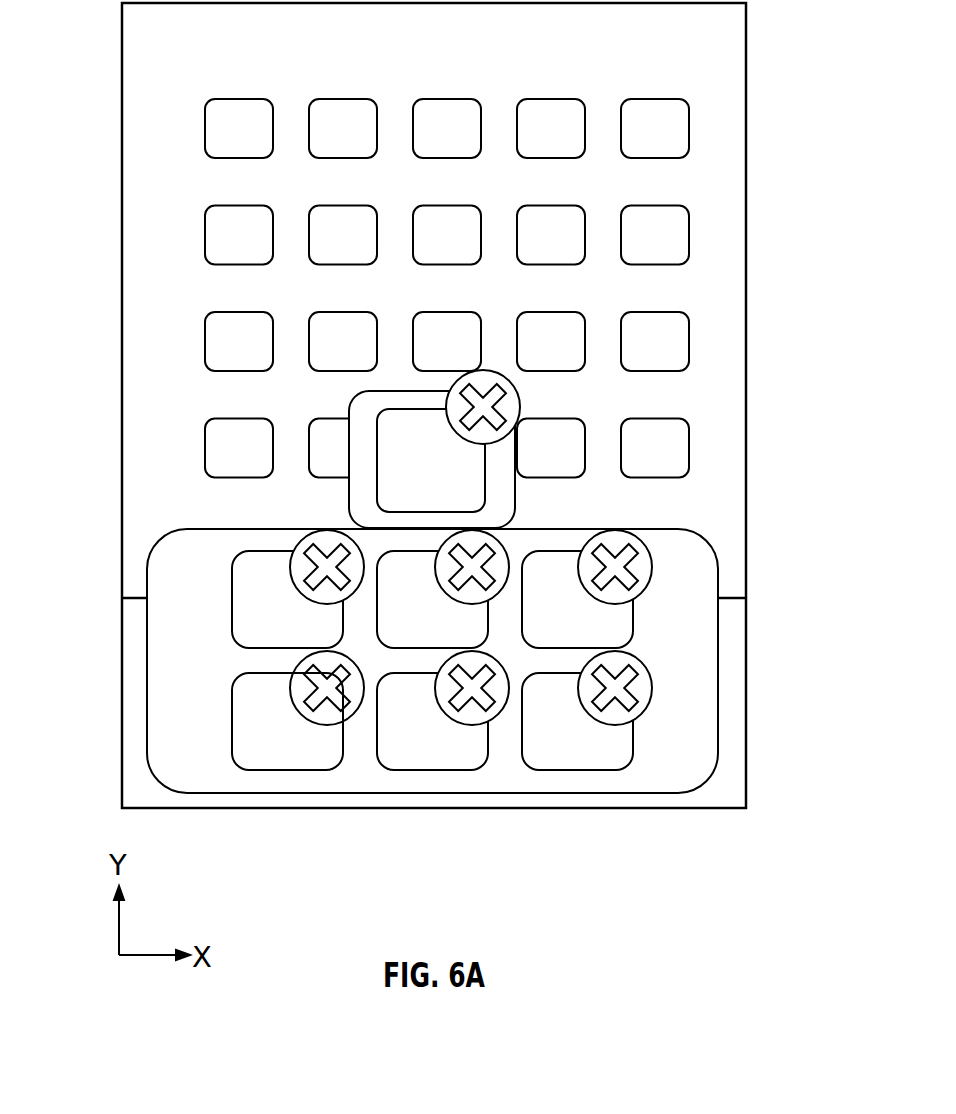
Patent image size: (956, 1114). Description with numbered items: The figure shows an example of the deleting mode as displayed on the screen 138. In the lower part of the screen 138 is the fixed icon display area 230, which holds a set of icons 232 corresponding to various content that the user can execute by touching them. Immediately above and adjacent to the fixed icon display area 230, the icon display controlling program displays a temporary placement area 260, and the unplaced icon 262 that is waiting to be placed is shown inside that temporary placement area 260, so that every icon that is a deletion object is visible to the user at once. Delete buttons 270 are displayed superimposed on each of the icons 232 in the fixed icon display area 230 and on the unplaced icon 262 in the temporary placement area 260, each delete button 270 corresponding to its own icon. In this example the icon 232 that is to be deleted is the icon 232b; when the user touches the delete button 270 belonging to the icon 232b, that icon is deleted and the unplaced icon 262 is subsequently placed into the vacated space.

The screen 138 is at (140, 72).
The fixed icon display area 230 is at (685, 767).
The icon 232 is at (258, 599).
The icon to be deleted 232b is at (287, 750).
The temporary placement area 260 is at (494, 509).
The unplaced icon 262 is at (456, 475).
The delete button 270 is at (287, 683).